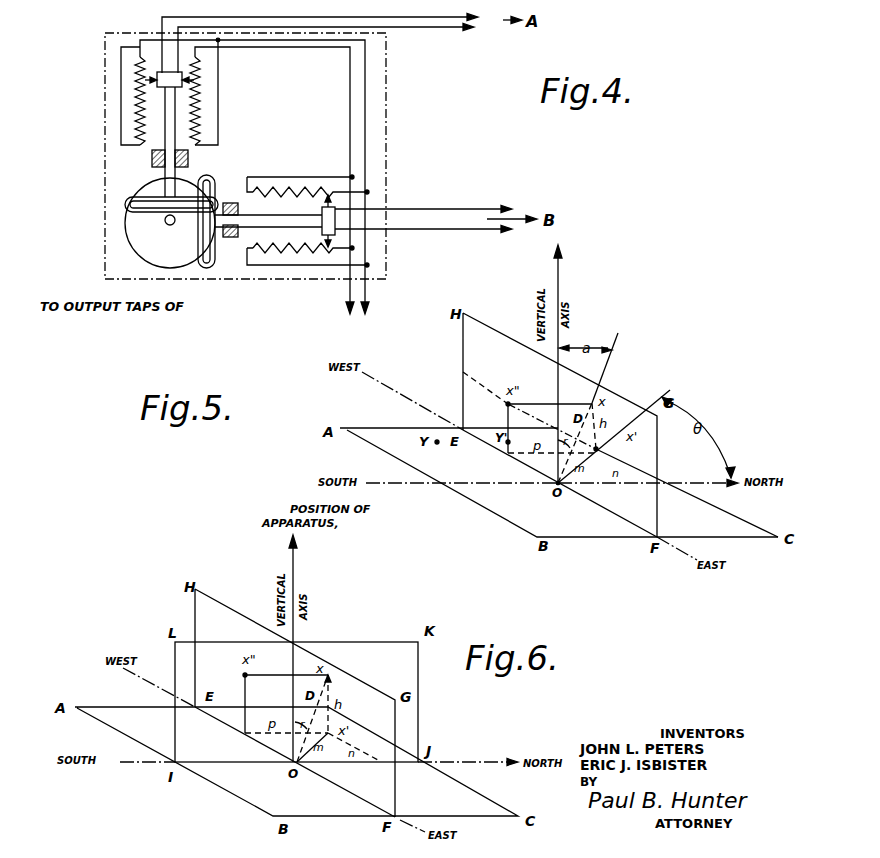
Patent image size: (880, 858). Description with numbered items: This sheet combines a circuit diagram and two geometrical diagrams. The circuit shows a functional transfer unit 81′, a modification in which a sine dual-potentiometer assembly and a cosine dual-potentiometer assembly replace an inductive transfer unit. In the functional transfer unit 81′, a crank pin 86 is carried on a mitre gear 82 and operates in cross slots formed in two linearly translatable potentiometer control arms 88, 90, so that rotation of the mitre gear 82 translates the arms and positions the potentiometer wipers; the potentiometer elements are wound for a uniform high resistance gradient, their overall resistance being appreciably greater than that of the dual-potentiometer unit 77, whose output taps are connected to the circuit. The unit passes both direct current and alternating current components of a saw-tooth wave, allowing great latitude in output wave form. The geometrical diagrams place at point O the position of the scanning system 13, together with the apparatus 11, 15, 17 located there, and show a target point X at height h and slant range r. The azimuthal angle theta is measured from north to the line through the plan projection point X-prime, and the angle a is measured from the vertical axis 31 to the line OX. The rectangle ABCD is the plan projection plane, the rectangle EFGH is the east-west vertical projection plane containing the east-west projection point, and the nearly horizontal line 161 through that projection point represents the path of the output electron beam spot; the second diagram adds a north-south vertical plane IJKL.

In FIG. 4, the functional transfer unit 81′ is at (105, 55).
In FIG. 4, the potentiometer control arm 90 is at (160, 170).
In FIG. 4, the crank pin 86 is at (206, 202).
In FIG. 4, the mitre gear 82 is at (157, 270).
In FIG. 4, the potentiometer control arm 88 is at (248, 222).
In FIG. 4, the dual-potentiometer unit 77 is at (345, 316).
In FIG. 5, the vertical axis 31 is at (566, 291).
In FIG. 6, the vertical axis 31 is at (296, 637).
In FIG. 5, the nearly horizontal line 161 is at (471, 378).
In FIG. 5, the apparatus position 11 is at (556, 485).
In FIG. 5, the scanning system 13 is at (458, 506).
In FIG. 5, the apparatus position 15 is at (469, 506).
In FIG. 5, the apparatus position 17 is at (479, 506).